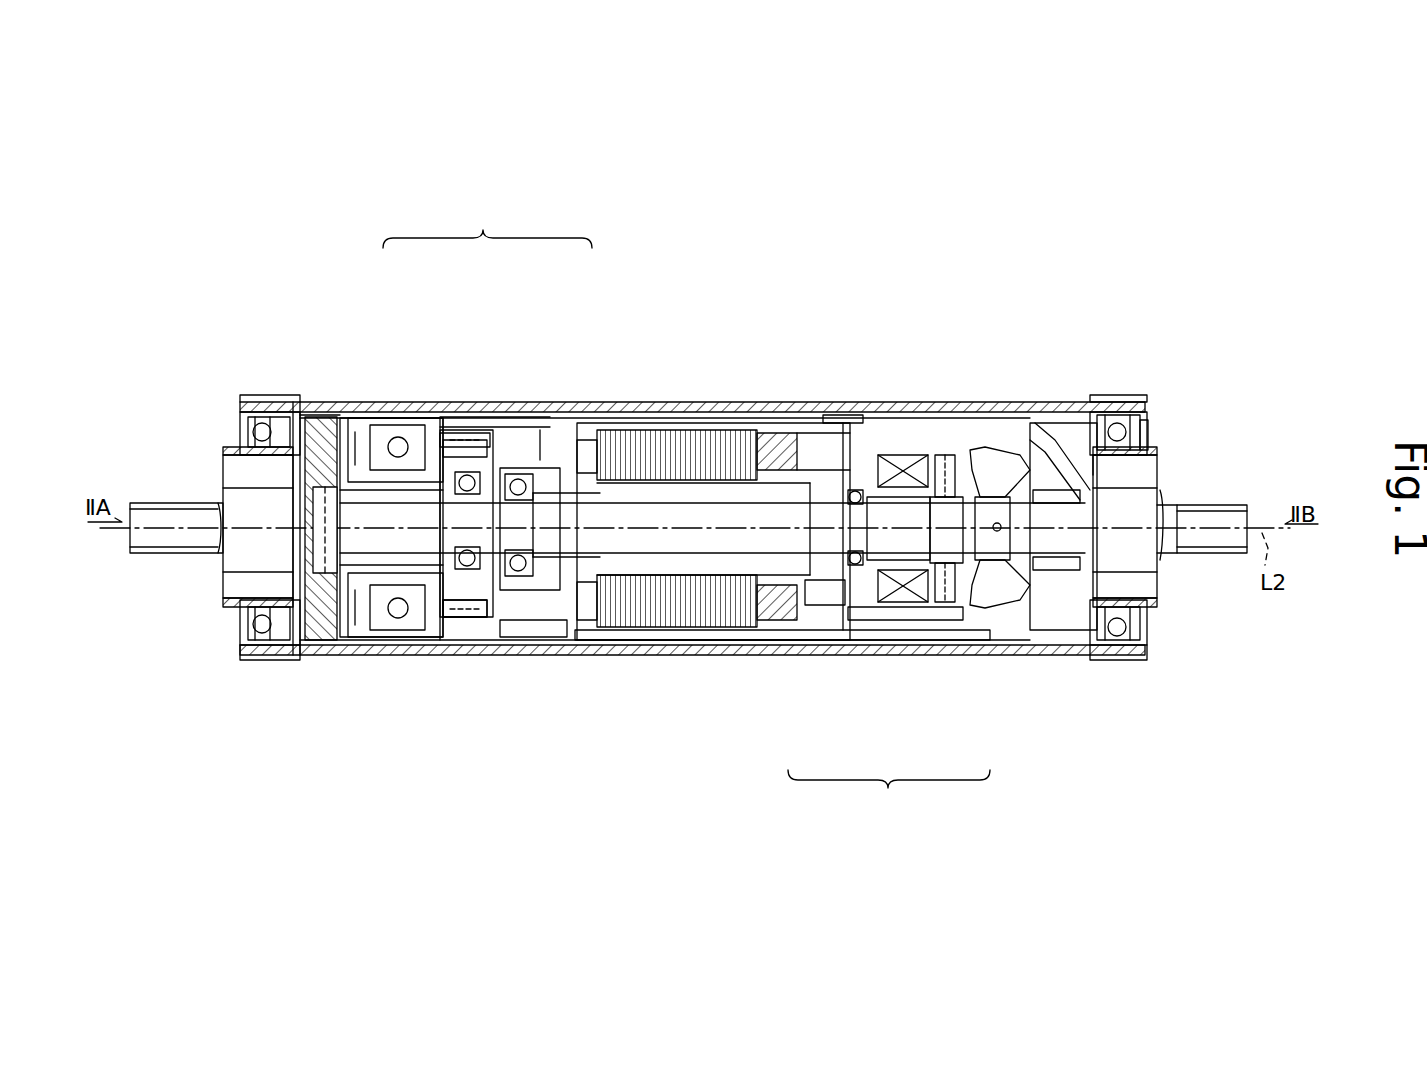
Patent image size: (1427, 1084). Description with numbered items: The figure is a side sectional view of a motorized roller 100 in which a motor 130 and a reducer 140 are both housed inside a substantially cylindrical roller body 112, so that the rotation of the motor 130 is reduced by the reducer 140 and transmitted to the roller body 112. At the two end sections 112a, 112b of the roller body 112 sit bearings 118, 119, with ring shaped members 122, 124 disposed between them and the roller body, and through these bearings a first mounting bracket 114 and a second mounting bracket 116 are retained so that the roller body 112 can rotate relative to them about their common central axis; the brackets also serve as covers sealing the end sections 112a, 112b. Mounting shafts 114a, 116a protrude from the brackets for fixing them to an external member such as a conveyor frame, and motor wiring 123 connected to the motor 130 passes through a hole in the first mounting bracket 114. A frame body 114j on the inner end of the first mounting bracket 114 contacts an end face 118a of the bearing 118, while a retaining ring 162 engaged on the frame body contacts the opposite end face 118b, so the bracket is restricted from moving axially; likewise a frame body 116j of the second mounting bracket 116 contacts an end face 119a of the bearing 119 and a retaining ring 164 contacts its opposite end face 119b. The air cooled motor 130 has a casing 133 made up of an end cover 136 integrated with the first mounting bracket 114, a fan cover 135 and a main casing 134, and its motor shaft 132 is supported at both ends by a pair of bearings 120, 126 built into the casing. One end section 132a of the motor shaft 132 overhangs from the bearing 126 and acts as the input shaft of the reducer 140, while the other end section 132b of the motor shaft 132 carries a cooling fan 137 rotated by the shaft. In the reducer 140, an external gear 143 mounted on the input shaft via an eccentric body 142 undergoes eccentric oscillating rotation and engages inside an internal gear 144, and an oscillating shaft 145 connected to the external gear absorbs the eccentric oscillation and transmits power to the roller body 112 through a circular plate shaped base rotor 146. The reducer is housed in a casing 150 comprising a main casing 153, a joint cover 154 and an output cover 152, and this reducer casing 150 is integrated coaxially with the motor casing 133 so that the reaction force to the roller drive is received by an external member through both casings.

The motorized roller 100 is at (775, 265).
The roller body 112 is at (632, 398).
The end section of roller body 112a is at (1130, 660).
The end section of roller body 112b is at (255, 658).
The first mounting bracket 114 is at (1152, 605).
The mounting shaft 114a is at (1200, 518).
The frame body 114j is at (1093, 455).
The second mounting bracket 116 is at (225, 605).
The mounting shaft 116a is at (156, 500).
The frame body 116j is at (303, 403).
The bearing 118 is at (1133, 655).
The end face of bearing 118a is at (1083, 625).
The opposite end face of bearing 118b is at (1150, 430).
The bearing 119 is at (245, 630).
The end face of bearing 119a is at (298, 655).
The opposite end face of bearing 119b is at (245, 442).
The bearing 120 is at (845, 425).
The ring shaped member 122 is at (1127, 400).
The motor wiring 123 is at (1160, 470).
The ring shaped member 124 is at (252, 402).
The bearing 126 is at (530, 632).
The motor 130 is at (712, 440).
The motor shaft 132 is at (688, 545).
The end section of motor shaft 132a is at (512, 590).
The rotor end portion 132b is at (905, 515).
The casing 133 is at (889, 794).
The main casing 134 is at (783, 642).
The fan cover 135 is at (870, 642).
The end cover 136 is at (1015, 632).
The cooling fan 137 is at (990, 468).
The reducer 140 is at (512, 385).
The eccentric body 142 is at (474, 500).
The external gear 143 is at (462, 560).
The internal gear 144 is at (470, 600).
The oscillating shaft 145 is at (352, 642).
The base rotor 146 is at (322, 642).
The casing 150 is at (940, 675).
The output cover 152 is at (452, 432).
The main casing 153 is at (450, 470).
The joint cover 154 is at (537, 455).
The retaining ring 162 is at (1155, 445).
The retaining ring 164 is at (240, 618).